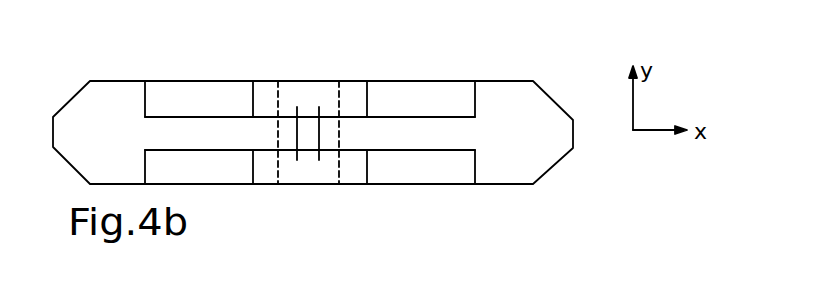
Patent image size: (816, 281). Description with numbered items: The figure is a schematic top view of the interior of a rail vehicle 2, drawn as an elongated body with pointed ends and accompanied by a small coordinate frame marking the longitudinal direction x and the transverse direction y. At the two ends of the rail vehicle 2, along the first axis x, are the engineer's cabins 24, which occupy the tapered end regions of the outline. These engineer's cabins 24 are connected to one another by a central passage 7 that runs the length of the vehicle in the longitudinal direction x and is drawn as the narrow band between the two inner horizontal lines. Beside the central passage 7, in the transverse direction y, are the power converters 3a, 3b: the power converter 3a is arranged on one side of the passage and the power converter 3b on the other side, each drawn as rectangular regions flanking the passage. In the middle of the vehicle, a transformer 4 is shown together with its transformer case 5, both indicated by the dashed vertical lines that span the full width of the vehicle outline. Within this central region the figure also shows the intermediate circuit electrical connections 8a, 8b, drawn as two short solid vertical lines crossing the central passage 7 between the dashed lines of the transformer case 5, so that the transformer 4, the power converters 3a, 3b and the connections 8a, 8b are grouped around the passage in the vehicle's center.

The rail vehicle 2 is at (552, 92).
The engineer's cabins 24 is at (116, 98).
The central passage 7 is at (412, 130).
The power converter 3a is at (263, 97).
The power converter 3b is at (268, 168).
The transformer 4 is at (327, 172).
The transformer case 5 is at (340, 95).
The intermediate circuit electrical connection 8a is at (297, 108).
The intermediate circuit electrical connection 8b is at (320, 107).